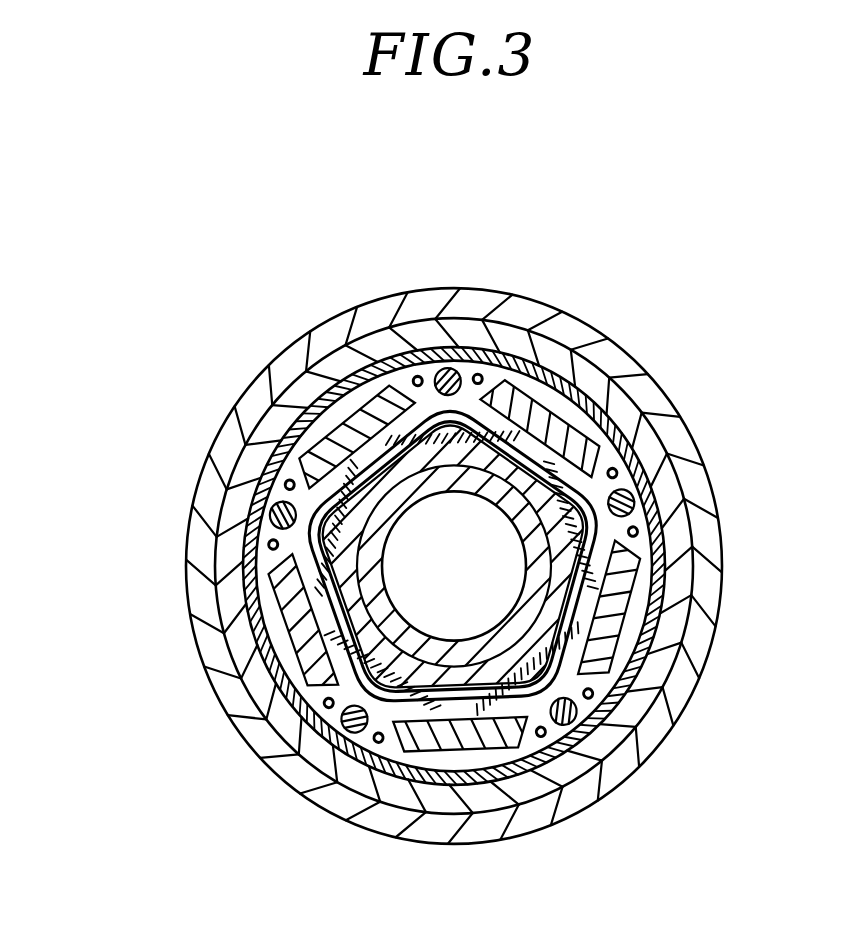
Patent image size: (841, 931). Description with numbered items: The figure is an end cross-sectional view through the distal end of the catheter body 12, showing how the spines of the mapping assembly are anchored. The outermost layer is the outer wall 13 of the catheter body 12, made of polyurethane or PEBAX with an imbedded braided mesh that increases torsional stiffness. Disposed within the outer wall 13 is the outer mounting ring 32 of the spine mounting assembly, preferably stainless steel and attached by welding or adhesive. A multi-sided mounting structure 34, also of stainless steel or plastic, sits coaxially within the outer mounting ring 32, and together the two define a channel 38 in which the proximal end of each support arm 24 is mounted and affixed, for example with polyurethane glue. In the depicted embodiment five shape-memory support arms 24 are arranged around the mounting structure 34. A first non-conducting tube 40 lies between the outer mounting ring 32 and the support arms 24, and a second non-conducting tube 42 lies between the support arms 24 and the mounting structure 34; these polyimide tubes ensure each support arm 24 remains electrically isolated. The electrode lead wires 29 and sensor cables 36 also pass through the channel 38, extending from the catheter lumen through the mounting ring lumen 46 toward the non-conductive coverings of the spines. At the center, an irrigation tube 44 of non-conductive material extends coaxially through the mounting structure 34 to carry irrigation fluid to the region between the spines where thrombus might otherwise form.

The catheter body 12 is at (234, 287).
The outer wall 13 is at (480, 295).
The support arm 24 is at (537, 397).
The electrode lead wire 29 is at (286, 486).
The outer mounting ring 32 is at (340, 340).
The mounting structure 34 is at (492, 615).
The sensor cable 36 is at (269, 522).
The channel 38 is at (533, 745).
The first non-conducting tube 40 is at (597, 413).
The second non-conducting tube 42 is at (637, 477).
The irrigation tube 44 is at (575, 595).
The mounting ring lumen 46 is at (627, 770).